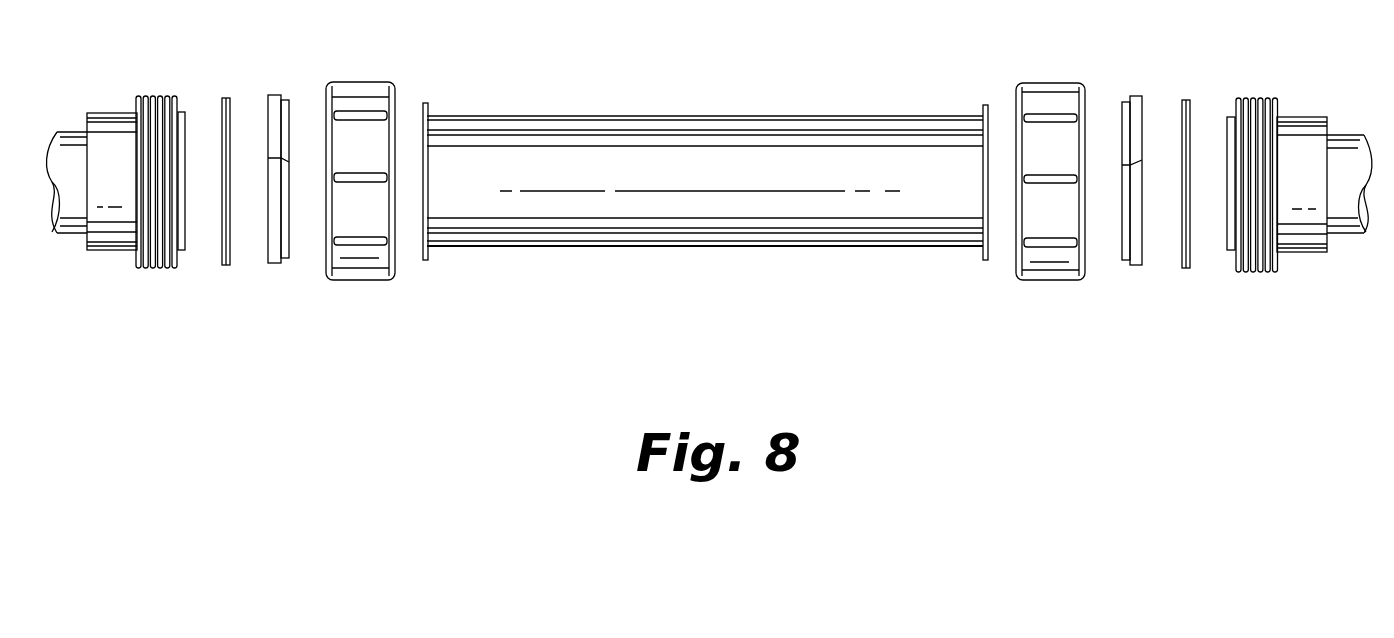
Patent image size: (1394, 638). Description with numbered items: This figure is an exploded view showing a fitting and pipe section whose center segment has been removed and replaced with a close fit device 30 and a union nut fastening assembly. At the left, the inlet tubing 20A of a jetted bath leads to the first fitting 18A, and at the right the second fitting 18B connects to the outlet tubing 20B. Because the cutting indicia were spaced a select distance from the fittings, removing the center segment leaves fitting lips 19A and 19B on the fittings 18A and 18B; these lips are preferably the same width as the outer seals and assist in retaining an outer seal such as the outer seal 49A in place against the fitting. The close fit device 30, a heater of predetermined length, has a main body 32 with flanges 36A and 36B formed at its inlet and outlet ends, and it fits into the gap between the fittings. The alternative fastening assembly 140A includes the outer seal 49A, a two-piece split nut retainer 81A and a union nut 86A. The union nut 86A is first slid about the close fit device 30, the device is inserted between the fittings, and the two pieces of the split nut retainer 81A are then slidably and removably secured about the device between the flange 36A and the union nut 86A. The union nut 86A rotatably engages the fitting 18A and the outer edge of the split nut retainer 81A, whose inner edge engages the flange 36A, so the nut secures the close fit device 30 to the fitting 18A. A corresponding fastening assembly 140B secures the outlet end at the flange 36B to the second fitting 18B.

The tubing 20A is at (70, 131).
The first fitting 18A is at (157, 97).
The fitting lip 19A is at (183, 113).
The outer seal 49A is at (227, 98).
The split nut retainer 81A is at (279, 96).
The union nut 86A is at (362, 83).
The fastening assembly 140A is at (322, 211).
The close fit device 30 is at (730, 173).
The main body 32 is at (797, 248).
The flange 36A is at (428, 256).
The flange 36B is at (987, 258).
The fastening assembly 140B is at (1108, 266).
The fitting lip 19B is at (1231, 116).
The second fitting 18B is at (1261, 98).
The tubing 20B is at (1350, 135).